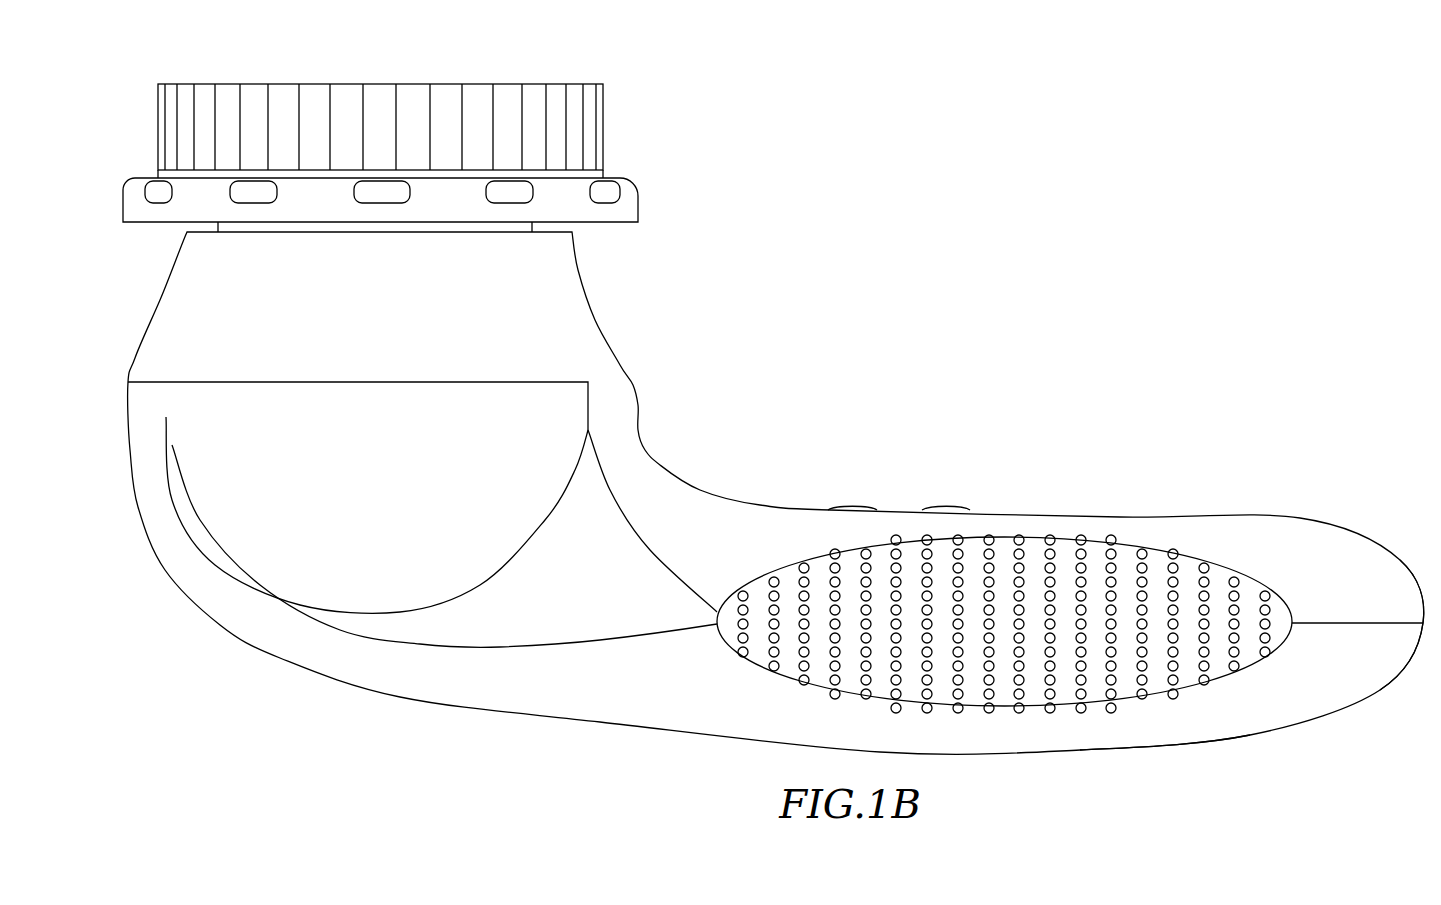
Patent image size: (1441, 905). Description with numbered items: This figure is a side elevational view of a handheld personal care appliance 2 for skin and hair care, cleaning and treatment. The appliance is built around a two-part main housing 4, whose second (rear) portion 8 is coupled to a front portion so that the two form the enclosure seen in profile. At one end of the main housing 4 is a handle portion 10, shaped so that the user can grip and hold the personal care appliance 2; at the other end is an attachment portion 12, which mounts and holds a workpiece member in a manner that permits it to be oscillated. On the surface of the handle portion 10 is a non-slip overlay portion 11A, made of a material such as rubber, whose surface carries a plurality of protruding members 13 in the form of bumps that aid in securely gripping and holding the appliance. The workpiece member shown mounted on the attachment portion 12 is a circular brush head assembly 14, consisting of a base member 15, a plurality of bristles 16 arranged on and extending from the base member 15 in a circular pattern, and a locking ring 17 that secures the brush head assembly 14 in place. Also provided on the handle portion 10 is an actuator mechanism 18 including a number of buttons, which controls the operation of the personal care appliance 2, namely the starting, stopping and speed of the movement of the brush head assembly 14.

The personal care appliance 2 is at (937, 243).
The main housing 4 is at (652, 478).
The second (rear) portion 8 is at (1180, 730).
The handle portion 10 is at (1408, 672).
The non-slip overlay portion 11A is at (855, 690).
The attachment portion 12 is at (138, 507).
The protruding members 13 is at (1090, 568).
The brush head assembly 14 is at (420, 143).
The base member 15 is at (405, 100).
The bristles 16 is at (578, 92).
The locking ring 17 is at (615, 222).
The actuator mechanism 18 is at (947, 506).